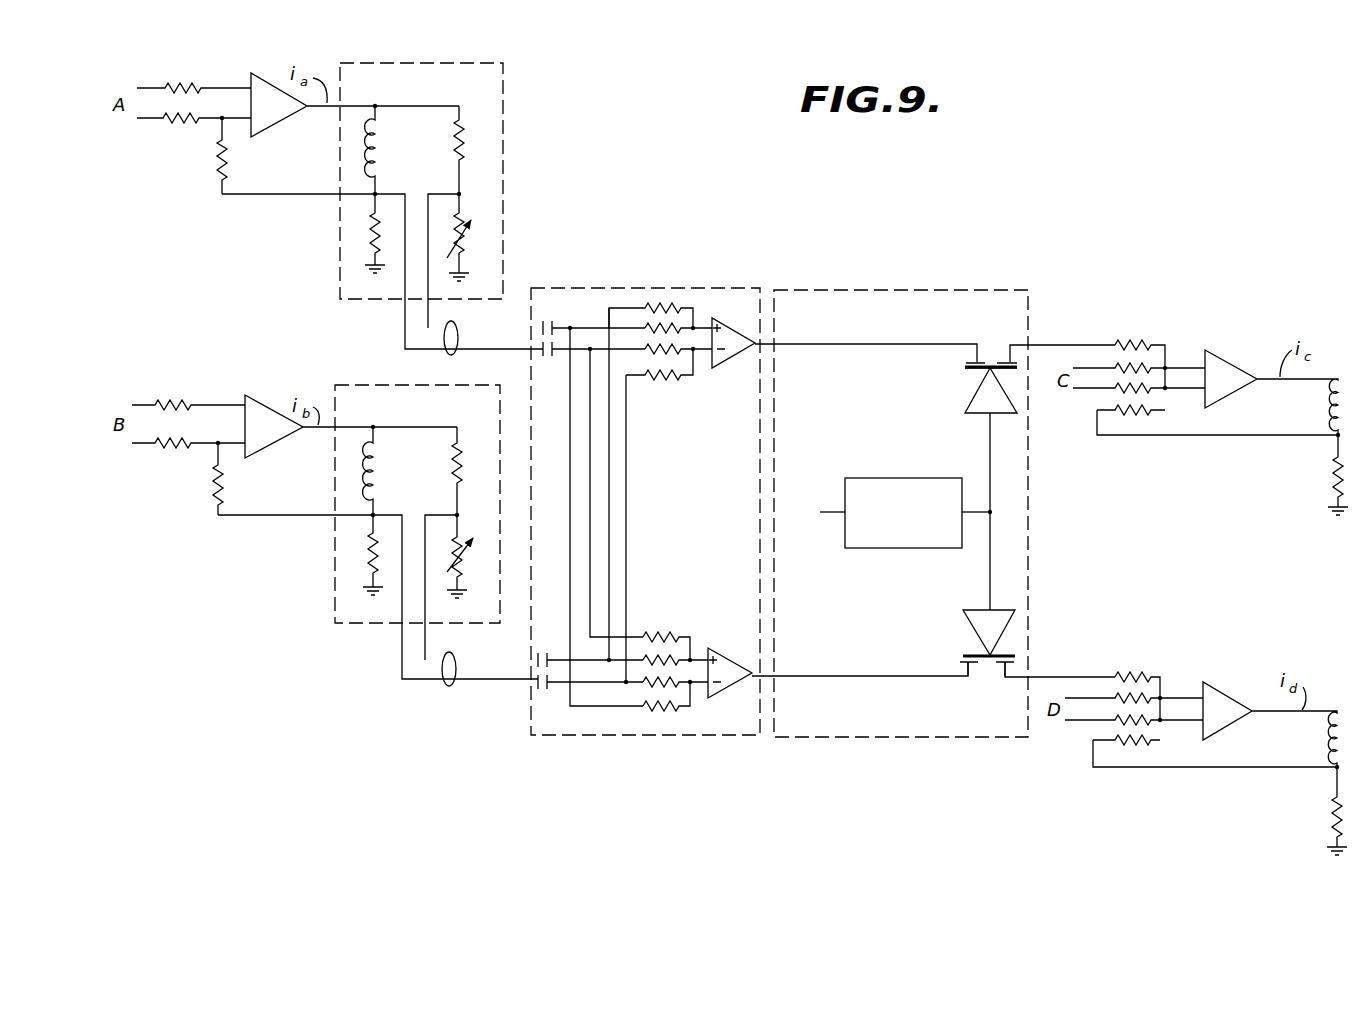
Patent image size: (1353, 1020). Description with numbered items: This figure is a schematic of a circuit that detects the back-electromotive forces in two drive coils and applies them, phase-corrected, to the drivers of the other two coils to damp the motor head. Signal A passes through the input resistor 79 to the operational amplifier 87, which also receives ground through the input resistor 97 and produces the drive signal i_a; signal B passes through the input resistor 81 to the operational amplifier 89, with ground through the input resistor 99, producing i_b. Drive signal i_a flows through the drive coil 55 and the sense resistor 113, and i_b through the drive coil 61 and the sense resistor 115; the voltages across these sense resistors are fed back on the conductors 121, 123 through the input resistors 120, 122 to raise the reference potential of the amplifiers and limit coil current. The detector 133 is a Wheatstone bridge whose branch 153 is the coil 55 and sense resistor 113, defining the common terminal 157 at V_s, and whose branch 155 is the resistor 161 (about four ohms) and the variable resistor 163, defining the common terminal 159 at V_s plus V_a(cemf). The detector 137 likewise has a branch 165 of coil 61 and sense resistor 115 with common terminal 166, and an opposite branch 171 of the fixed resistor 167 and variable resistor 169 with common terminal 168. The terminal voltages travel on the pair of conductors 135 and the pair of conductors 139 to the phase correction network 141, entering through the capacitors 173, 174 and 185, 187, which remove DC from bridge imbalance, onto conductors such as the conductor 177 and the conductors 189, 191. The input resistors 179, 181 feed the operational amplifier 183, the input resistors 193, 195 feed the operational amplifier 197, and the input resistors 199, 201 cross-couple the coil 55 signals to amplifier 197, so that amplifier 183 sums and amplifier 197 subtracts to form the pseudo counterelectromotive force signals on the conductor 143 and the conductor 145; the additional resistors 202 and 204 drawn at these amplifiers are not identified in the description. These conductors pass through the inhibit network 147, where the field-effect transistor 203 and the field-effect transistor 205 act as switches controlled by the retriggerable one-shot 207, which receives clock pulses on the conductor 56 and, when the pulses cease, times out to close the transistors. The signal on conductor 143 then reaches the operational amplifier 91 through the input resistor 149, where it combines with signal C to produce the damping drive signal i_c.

The drive coil 55 is at (383, 131).
The conductor 56 is at (830, 516).
The drive coil 61 is at (378, 448).
The input resistor 79 is at (178, 86).
The input resistor 81 is at (172, 403).
The operational amplifier 87 is at (270, 74).
The operational amplifier 89 is at (267, 397).
The operational amplifier 91 is at (1222, 352).
The input resistor 97 is at (180, 128).
The input resistor 99 is at (178, 448).
The sense resistor 113 is at (368, 235).
The sense resistor 115 is at (367, 548).
The input resistor 120 is at (224, 155).
The conductor 121 is at (292, 194).
The input resistor 122 is at (222, 473).
The conductor 123 is at (280, 518).
The detector 133 is at (505, 97).
The pair of conductors 135 is at (460, 325).
The detector 137 is at (345, 385).
The pair of conductors 139 is at (445, 685).
The phase correction network 141 is at (690, 288).
The conductor 143 is at (767, 345).
The conductor 145 is at (765, 676).
The inhibit network 147 is at (963, 290).
The input resistor 149 is at (1127, 343).
The branch 153 is at (383, 85).
The branch 155 is at (465, 88).
The common terminal 157 is at (372, 198).
The common terminal 159 is at (461, 197).
The resistor 161 is at (455, 153).
The variable resistor 163 is at (463, 245).
The branch 165 is at (405, 367).
The common terminal 166 is at (373, 515).
The fixed resistor 167 is at (450, 465).
The common terminal 168 is at (460, 517).
The variable resistor 169 is at (467, 570).
The branch 171 is at (458, 413).
The capacitor 173 is at (555, 320).
The capacitor 174 is at (552, 358).
The conductor 177 is at (620, 355).
The input resistor 179 is at (640, 323).
The input resistor 181 is at (638, 376).
The operational amplifier 183 is at (748, 305).
The capacitor 185 is at (537, 657).
The capacitor 187 is at (533, 687).
The conductor 189 is at (583, 658).
The conductor 191 is at (587, 683).
The input resistor 193 is at (637, 655).
The input resistor 195 is at (643, 690).
The operational amplifier 197 is at (743, 627).
The input resistor 199 is at (657, 712).
The input resistor 201 is at (663, 633).
The feedback resistor 202 is at (663, 300).
The field-effect transistor 203 is at (978, 372).
The resistor 204 is at (670, 378).
The field-effect transistor 205 is at (967, 642).
The retriggerable one-shot 207 is at (888, 478).